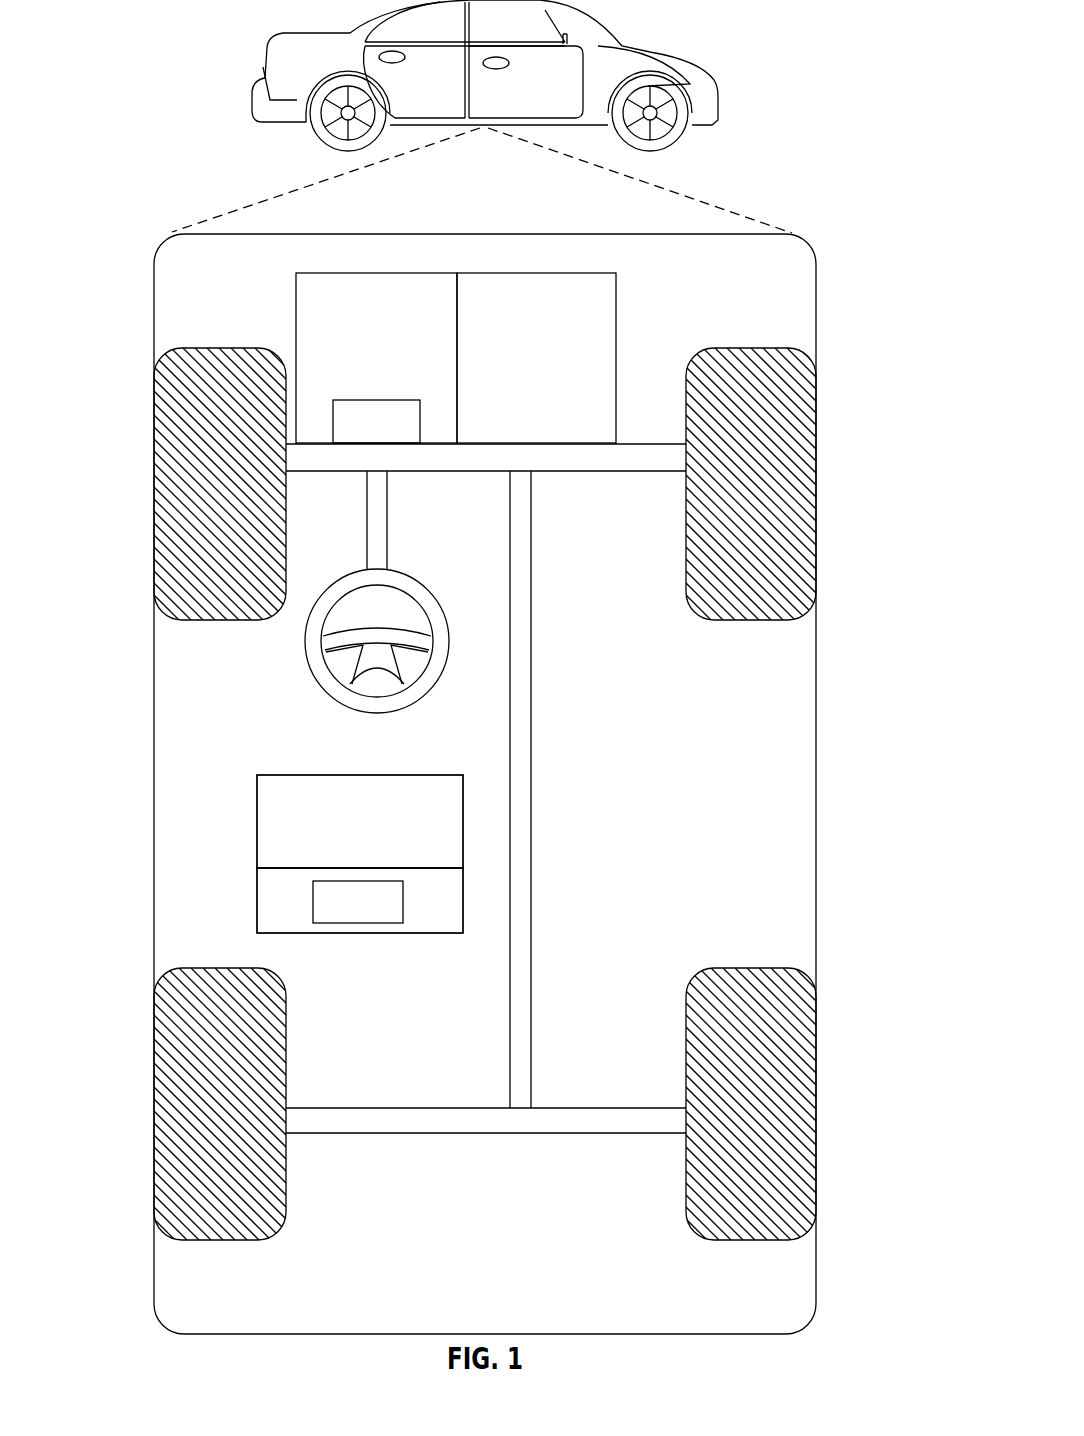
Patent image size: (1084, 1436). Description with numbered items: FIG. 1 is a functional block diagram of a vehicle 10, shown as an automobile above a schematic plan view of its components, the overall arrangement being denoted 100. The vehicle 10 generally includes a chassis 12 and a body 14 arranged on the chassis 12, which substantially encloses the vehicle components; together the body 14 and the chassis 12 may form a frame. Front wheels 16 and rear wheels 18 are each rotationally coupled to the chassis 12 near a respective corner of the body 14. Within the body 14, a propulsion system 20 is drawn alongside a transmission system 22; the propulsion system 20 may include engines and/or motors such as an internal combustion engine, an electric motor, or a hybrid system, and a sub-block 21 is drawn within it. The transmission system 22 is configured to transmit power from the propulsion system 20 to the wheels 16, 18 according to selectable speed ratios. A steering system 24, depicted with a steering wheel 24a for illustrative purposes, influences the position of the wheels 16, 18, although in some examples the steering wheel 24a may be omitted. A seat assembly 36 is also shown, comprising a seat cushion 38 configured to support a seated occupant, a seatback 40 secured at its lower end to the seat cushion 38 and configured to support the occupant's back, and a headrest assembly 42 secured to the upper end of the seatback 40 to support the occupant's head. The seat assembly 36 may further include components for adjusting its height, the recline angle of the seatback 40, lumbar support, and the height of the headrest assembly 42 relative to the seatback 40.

The vehicle 10 is at (254, 92).
The vehicle system 100 is at (836, 179).
The chassis 12 is at (510, 975).
The body 14 is at (154, 775).
The front wheels 16 is at (221, 348).
The rear wheels 18 is at (219, 1240).
The propulsion system 20 is at (391, 372).
The engine component 21 is at (391, 435).
The transmission system 22 is at (551, 372).
The steering system 24 is at (405, 573).
The steering wheel 24a is at (326, 689).
The seat assembly 36 is at (257, 822).
The seat cushion 38 is at (375, 835).
The seatback 40 is at (445, 915).
The headrest assembly 42 is at (372, 915).